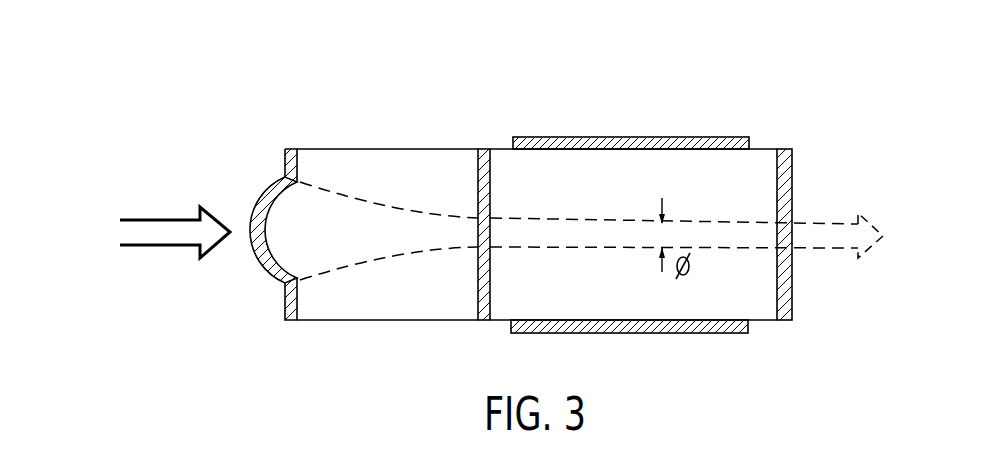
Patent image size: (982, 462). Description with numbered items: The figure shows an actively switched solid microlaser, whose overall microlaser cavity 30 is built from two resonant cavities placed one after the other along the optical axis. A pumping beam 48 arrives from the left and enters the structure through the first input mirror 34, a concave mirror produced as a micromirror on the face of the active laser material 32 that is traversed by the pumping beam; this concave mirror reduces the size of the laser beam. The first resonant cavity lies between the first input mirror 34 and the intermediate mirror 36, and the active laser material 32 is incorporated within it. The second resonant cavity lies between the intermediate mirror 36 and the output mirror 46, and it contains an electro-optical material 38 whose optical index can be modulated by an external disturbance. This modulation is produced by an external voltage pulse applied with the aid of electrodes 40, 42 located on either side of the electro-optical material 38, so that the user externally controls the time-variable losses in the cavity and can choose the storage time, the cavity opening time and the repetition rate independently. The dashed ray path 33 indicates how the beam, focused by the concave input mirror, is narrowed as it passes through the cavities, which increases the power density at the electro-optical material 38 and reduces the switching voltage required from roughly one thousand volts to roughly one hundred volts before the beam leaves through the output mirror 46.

The microlaser cavity 30 is at (299, 120).
The active laser material 32 is at (417, 157).
The light ray path 33 is at (343, 263).
The first input mirror 34 is at (280, 282).
The intermediate mirror 36 is at (480, 307).
The electro-optical material 38 is at (760, 158).
The electrode 40 is at (582, 329).
The electrode 42 is at (634, 142).
The output mirror 46 is at (787, 305).
The incoming light 48 is at (168, 225).